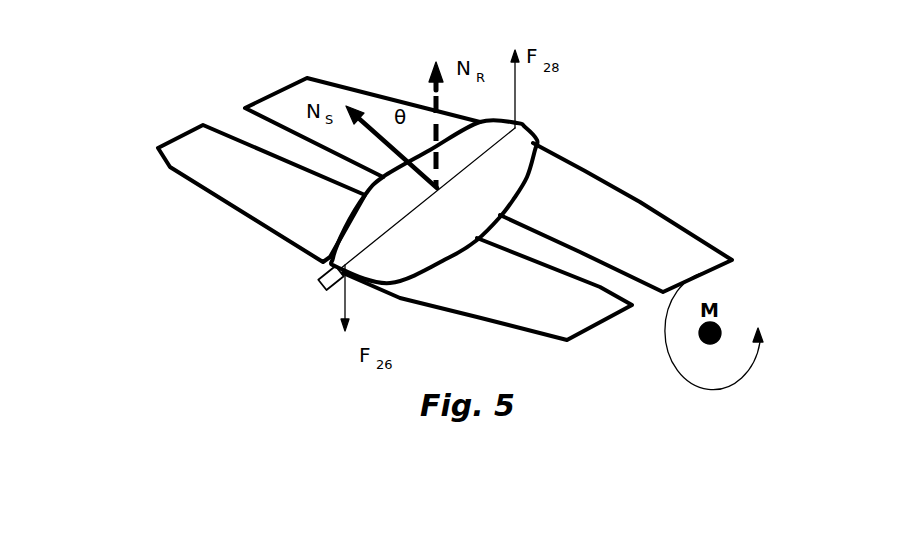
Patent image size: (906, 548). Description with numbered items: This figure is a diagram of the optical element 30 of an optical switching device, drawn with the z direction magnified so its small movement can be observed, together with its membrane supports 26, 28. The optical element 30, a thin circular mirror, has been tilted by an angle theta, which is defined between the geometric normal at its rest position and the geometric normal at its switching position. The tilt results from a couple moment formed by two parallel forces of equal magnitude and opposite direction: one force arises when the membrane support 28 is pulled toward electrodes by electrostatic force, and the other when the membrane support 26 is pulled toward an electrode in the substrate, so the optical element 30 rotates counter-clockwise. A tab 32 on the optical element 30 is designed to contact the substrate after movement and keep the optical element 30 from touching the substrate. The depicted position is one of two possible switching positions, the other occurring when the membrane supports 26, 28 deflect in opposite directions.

The membrane support 26 is at (502, 292).
The membrane support 28 is at (655, 223).
The optical element 30 is at (513, 143).
The tab 32 is at (320, 277).